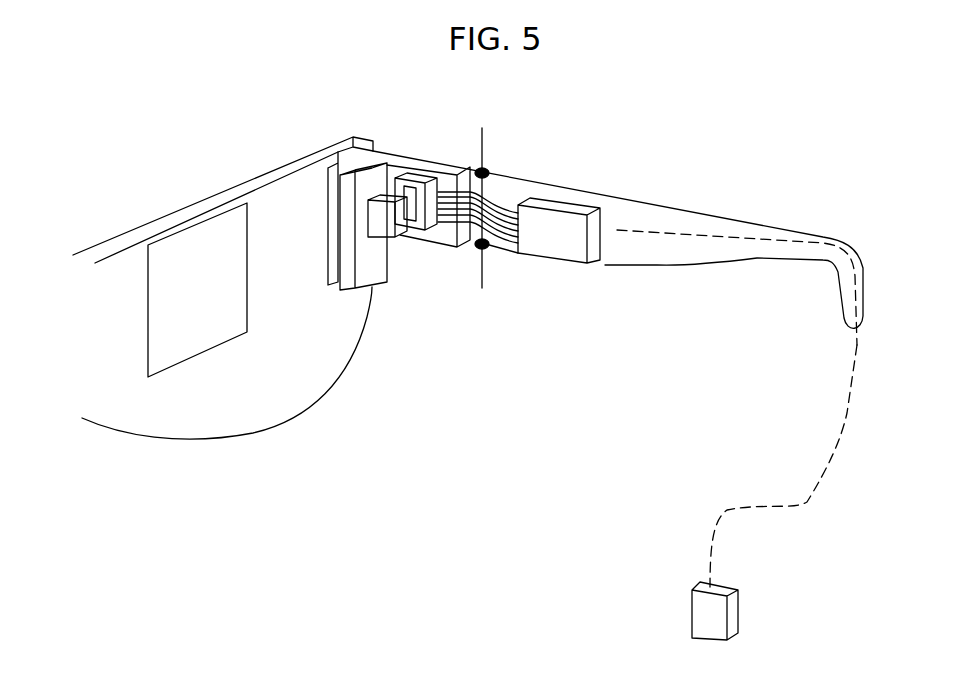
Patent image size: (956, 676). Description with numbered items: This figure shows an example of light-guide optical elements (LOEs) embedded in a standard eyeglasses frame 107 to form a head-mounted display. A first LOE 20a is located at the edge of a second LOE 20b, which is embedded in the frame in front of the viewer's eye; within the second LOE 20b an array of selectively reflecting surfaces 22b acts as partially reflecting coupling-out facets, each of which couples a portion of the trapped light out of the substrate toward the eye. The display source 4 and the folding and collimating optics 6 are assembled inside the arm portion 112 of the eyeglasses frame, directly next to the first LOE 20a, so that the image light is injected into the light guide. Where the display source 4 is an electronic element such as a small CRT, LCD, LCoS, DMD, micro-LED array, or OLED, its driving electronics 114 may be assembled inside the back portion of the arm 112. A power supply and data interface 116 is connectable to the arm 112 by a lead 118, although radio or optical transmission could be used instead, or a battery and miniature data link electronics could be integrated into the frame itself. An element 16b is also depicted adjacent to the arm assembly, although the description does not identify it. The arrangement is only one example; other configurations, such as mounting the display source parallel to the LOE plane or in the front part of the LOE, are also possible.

The eyeglasses frame 107 is at (273, 177).
The selectively reflecting surfaces 22b is at (192, 242).
The circuit board 16b is at (352, 158).
The display source 4 is at (420, 187).
The folding and collimating optics 6 is at (380, 220).
The LOE 20a is at (378, 270).
The second LOE 20b is at (285, 375).
The driving electronics 114 is at (560, 205).
The arm portion 112 is at (640, 202).
The lead 118 is at (843, 418).
The power supply and data interface 116 is at (692, 598).